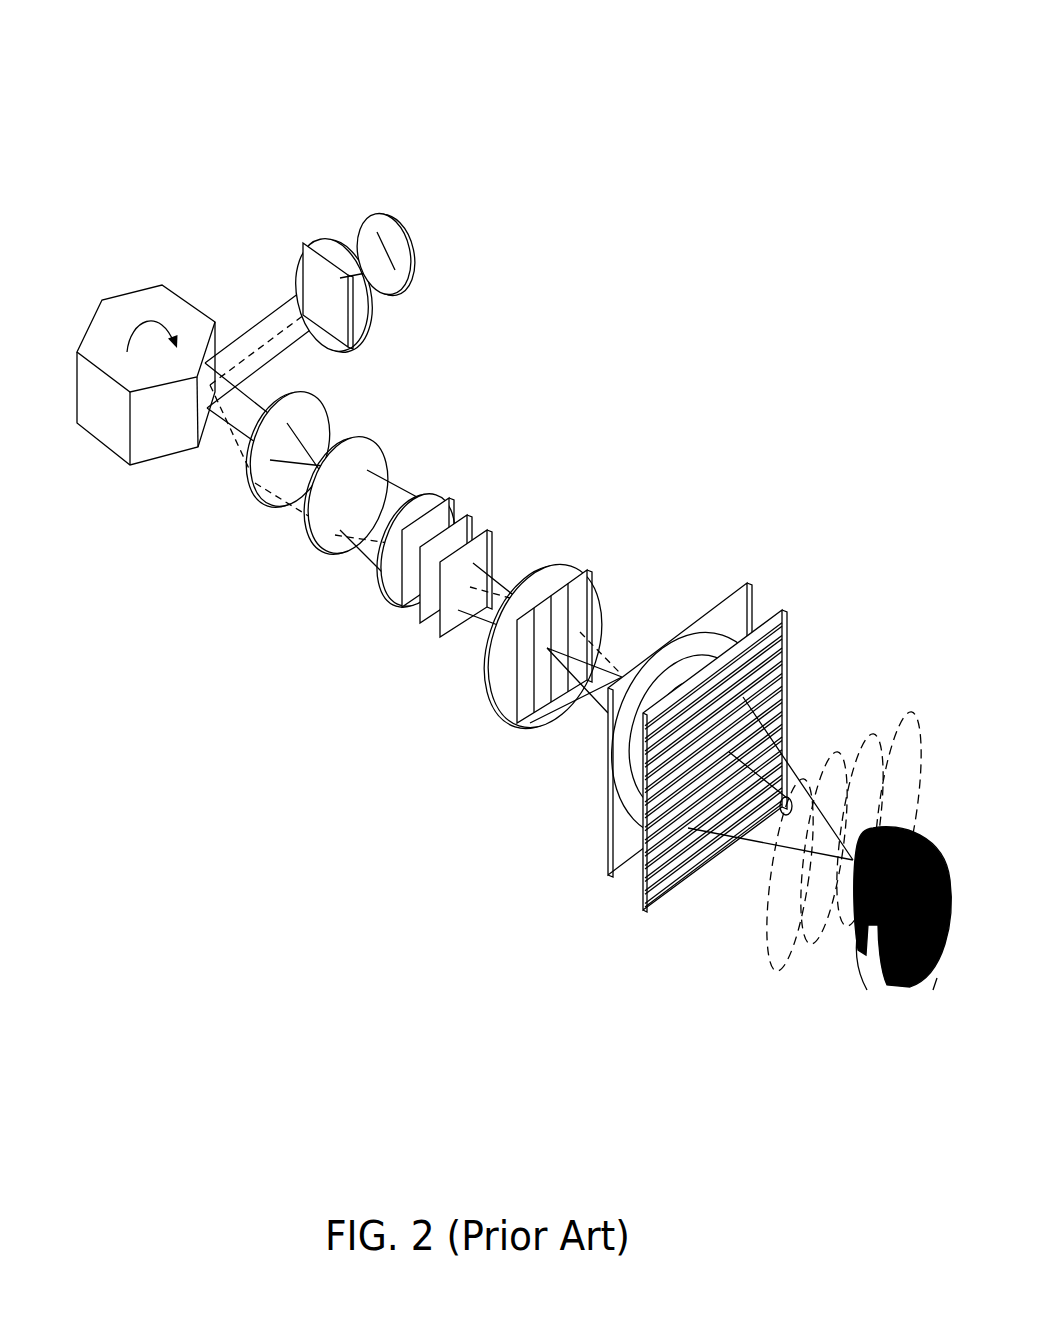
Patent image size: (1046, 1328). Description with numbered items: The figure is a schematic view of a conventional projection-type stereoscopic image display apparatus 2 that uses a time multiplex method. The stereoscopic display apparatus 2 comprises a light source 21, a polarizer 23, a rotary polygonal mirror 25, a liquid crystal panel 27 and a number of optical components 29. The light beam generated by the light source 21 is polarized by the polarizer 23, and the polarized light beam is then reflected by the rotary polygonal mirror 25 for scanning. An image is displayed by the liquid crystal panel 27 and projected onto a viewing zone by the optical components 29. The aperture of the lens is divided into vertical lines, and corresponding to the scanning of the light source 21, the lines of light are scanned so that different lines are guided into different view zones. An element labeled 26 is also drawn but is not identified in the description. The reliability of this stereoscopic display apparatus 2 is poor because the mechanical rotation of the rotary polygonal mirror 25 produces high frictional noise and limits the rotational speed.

The stereoscopic display apparatus 2 is at (365, 105).
The light source 21 is at (400, 232).
The polarizer 23 is at (305, 267).
The rotary polygonal mirror 25 is at (132, 290).
The liquid crystal panel 27 is at (448, 503).
The lenticular light valve 26 is at (493, 547).
The optical components 29 is at (850, 512).